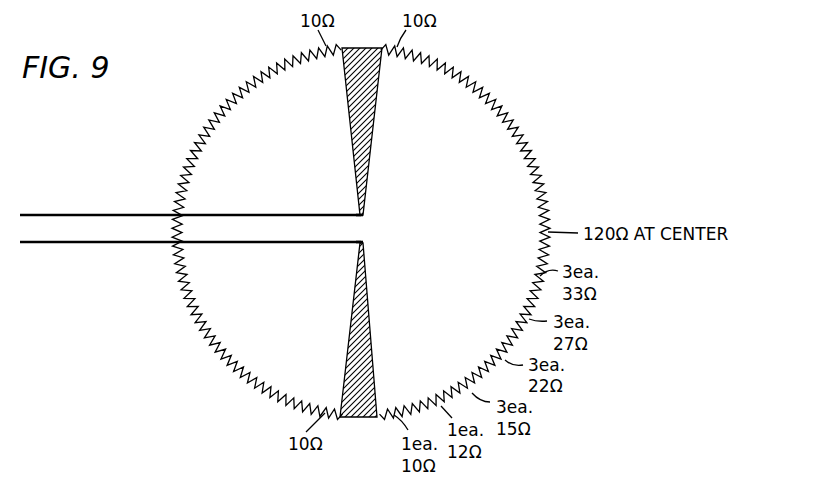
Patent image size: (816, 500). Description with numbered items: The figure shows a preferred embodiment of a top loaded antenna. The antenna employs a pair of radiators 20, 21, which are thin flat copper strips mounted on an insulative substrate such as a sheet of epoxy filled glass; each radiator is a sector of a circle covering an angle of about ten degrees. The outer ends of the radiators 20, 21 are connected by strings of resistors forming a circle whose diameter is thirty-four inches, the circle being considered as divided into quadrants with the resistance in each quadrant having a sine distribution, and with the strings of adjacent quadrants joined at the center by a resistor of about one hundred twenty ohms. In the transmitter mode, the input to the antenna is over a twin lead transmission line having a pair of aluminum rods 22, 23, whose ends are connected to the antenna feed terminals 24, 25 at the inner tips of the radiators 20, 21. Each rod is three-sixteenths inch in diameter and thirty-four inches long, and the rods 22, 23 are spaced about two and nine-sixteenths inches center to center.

The radiator 20 is at (371, 133).
The radiator 21 is at (369, 323).
The aluminum rod 22 is at (116, 214).
The aluminum rod 23 is at (119, 242).
The antenna feed terminal 24 is at (363, 215).
The antenna feed terminal 25 is at (363, 243).